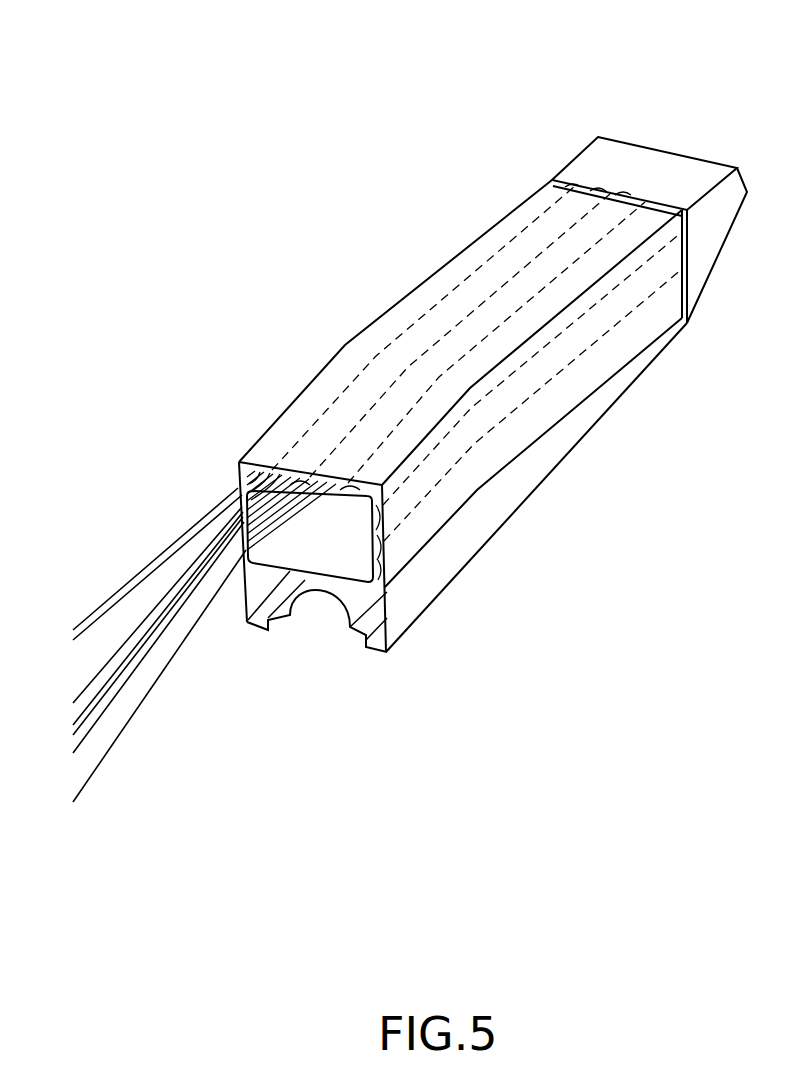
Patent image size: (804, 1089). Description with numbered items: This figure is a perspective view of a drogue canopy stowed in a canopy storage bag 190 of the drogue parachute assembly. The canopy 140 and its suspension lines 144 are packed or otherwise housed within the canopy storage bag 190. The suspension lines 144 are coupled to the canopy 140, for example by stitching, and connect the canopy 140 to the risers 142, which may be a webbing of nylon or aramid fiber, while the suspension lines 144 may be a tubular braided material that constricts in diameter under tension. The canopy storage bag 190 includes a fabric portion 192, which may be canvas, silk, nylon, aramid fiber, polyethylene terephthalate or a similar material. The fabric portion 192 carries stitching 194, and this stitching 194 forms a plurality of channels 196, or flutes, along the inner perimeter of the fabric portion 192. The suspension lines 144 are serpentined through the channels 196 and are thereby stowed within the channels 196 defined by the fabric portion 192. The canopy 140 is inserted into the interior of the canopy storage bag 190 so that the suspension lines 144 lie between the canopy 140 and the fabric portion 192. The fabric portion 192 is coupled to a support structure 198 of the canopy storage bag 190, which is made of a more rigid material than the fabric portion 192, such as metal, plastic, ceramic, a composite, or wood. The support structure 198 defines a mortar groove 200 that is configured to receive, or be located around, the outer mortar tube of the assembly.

The canopy storage bag 190 is at (305, 182).
The fabric portion 192 is at (330, 423).
The stitching 194 is at (365, 360).
The channels 196 is at (395, 320).
The support structure 198 is at (485, 508).
The mortar groove 200 is at (325, 617).
The canopy 140 is at (332, 558).
The risers 142 is at (132, 695).
The suspension lines 144 is at (238, 490).